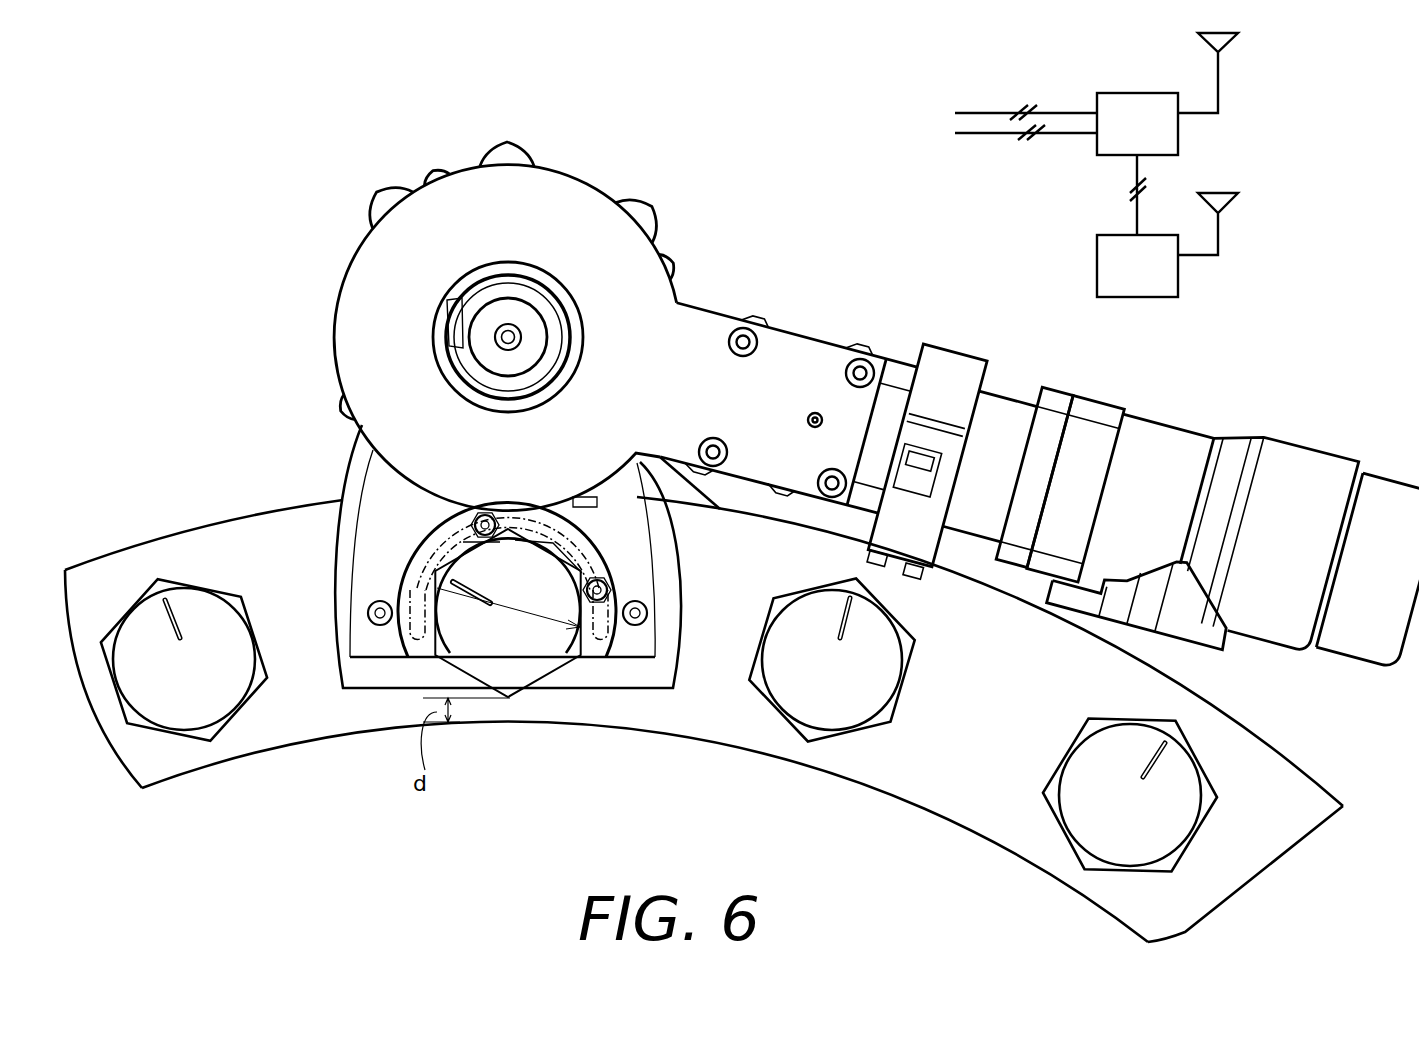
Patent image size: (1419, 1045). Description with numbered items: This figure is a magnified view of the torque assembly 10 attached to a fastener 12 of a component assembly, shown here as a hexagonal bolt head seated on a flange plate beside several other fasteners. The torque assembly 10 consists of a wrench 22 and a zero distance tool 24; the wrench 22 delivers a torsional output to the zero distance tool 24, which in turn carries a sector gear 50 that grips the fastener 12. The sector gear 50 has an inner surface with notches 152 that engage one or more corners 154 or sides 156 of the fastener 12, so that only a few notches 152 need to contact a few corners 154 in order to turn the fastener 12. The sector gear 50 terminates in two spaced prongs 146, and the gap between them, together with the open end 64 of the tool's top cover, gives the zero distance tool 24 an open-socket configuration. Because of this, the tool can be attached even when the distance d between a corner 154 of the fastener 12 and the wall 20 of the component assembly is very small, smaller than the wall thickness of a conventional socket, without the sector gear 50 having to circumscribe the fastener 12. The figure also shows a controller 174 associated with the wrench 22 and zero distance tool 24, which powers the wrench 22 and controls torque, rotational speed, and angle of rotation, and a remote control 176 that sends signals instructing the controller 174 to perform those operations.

The torque assembly 10 is at (209, 252).
The fastener 12 is at (552, 199).
The wall 20 is at (275, 740).
The wrench 22 is at (1026, 98).
The zero distance tool 24 is at (1026, 149).
The sector gear 50 is at (430, 545).
The open end 64 is at (588, 690).
The prongs 146 is at (503, 607).
The notches 152 is at (533, 540).
The corners 154 is at (747, 680).
The sides 156 is at (687, 627).
The controller 174 is at (1165, 140).
The remote control 176 is at (1165, 284).